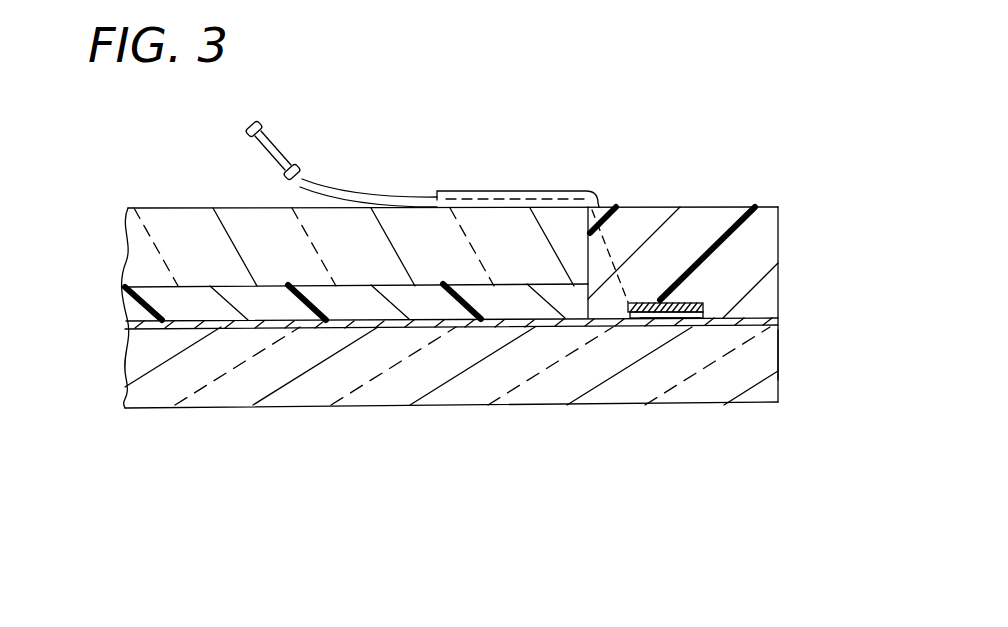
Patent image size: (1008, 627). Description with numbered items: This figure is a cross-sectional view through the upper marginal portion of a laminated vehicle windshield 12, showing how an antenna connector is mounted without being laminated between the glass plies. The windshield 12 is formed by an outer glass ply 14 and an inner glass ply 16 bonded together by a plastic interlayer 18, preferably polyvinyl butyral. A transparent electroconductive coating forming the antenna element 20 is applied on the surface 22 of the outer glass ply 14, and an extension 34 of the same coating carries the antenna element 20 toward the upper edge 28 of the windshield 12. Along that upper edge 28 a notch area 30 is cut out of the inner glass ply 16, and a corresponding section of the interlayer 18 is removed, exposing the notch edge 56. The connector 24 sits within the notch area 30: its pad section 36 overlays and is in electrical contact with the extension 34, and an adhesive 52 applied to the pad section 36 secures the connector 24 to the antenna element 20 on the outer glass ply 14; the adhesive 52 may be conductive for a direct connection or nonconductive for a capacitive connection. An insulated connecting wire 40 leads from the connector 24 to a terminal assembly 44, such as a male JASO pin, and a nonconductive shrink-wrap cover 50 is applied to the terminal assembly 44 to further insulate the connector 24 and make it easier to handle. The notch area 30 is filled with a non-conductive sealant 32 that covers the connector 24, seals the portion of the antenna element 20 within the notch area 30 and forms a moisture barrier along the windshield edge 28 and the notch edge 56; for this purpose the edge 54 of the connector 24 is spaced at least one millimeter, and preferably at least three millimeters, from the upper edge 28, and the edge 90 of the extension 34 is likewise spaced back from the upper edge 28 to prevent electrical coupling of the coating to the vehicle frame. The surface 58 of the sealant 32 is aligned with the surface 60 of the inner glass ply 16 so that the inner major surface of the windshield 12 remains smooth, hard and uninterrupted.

The laminated vehicle windshield 12 is at (82, 447).
The outer glass ply 14 is at (128, 367).
The inner glass ply 16 is at (126, 230).
The plastic interlayer 18 is at (127, 303).
The antenna element 20 is at (167, 331).
The surface of glass ply 22 is at (253, 307).
The connector 24 is at (435, 140).
The upper edge of windshield 28 is at (778, 350).
The notch area 30 is at (587, 258).
The sealant material 32 is at (762, 222).
The extension 34 is at (507, 326).
The pad section 36 is at (645, 301).
The insulated connecting wire 40 is at (367, 200).
The terminal assembly 44 is at (262, 132).
The shrink-wrap cover 50 is at (282, 172).
The adhesive 52 is at (663, 319).
The edge of connector 54 is at (703, 304).
The notch edge 56 is at (588, 247).
The surface of sealant 58 is at (720, 207).
The surface of inner glass ply 60 is at (157, 208).
The edge of extension 90 is at (740, 318).